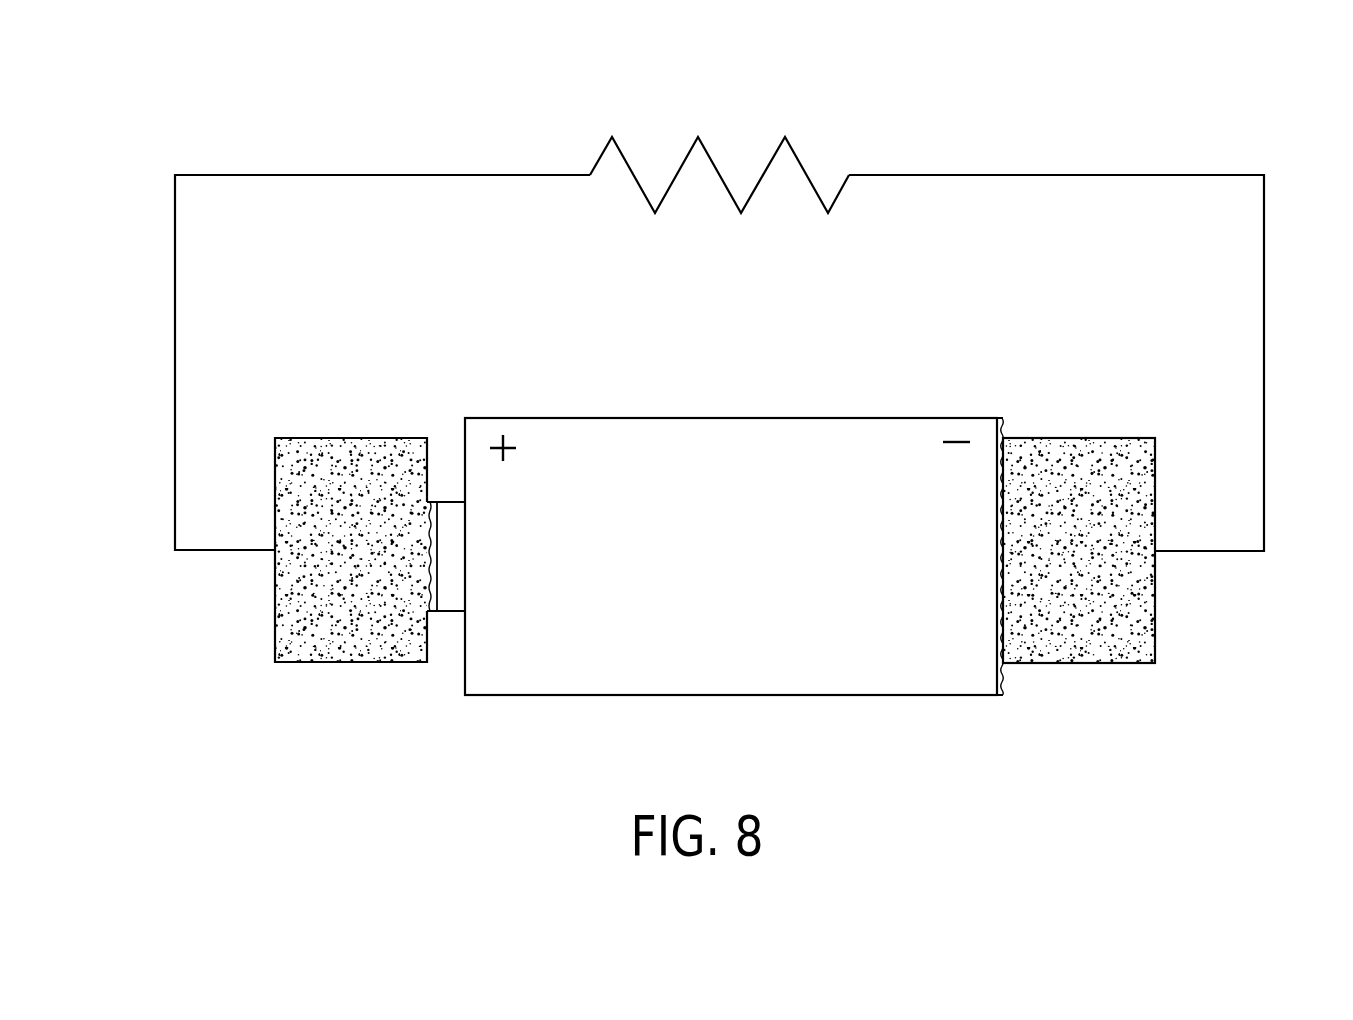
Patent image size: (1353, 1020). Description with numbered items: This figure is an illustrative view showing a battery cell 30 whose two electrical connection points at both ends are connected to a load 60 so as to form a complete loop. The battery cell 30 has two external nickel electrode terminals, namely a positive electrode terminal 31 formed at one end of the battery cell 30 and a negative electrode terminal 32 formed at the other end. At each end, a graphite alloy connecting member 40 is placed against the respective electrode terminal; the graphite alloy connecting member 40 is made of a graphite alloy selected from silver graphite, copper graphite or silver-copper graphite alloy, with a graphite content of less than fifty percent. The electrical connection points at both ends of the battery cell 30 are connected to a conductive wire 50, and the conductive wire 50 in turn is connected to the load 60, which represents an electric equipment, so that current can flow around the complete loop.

The battery cell 30 is at (557, 418).
The positive electrode terminal 31 is at (452, 605).
The negative electrode terminal 32 is at (995, 665).
The graphite alloy connecting member 40 is at (322, 437).
The conductive wire 50 is at (173, 437).
The load 60 is at (612, 130).